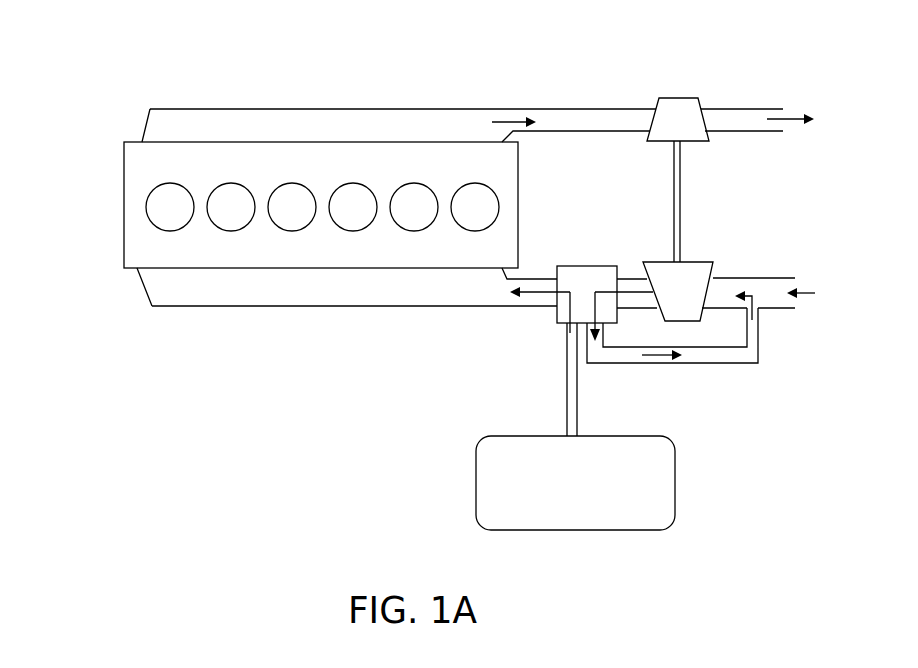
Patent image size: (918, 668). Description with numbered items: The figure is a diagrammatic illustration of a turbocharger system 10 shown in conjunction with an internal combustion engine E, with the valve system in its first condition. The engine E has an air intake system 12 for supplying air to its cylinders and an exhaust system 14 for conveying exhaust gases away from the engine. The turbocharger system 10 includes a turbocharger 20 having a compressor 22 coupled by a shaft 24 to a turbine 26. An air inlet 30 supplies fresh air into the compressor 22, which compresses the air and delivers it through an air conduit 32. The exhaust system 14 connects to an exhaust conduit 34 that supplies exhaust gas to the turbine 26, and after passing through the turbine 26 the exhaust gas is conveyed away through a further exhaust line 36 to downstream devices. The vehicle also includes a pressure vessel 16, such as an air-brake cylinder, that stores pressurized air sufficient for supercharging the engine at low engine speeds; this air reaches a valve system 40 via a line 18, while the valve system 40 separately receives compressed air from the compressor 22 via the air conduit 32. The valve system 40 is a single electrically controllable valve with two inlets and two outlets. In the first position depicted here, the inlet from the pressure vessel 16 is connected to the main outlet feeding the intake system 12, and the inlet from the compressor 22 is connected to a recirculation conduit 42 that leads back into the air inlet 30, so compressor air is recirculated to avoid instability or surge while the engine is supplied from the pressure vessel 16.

The internal combustion engine E is at (133, 181).
The turbocharger system 10 is at (814, 180).
The air intake system 12 is at (160, 288).
The exhaust system 14 is at (157, 120).
The pressure vessel 16 is at (483, 483).
The line 18 is at (568, 407).
The turbocharger 20 is at (644, 177).
The compressor 22 is at (688, 278).
The shaft 24 is at (673, 224).
The turbine 26 is at (680, 110).
The air inlet 30 is at (775, 300).
The air conduit 32 is at (637, 300).
The exhaust conduit 34 is at (582, 120).
The further exhaust line 36 is at (737, 120).
The valve system 40 is at (547, 320).
The recirculation conduit 42 is at (705, 353).